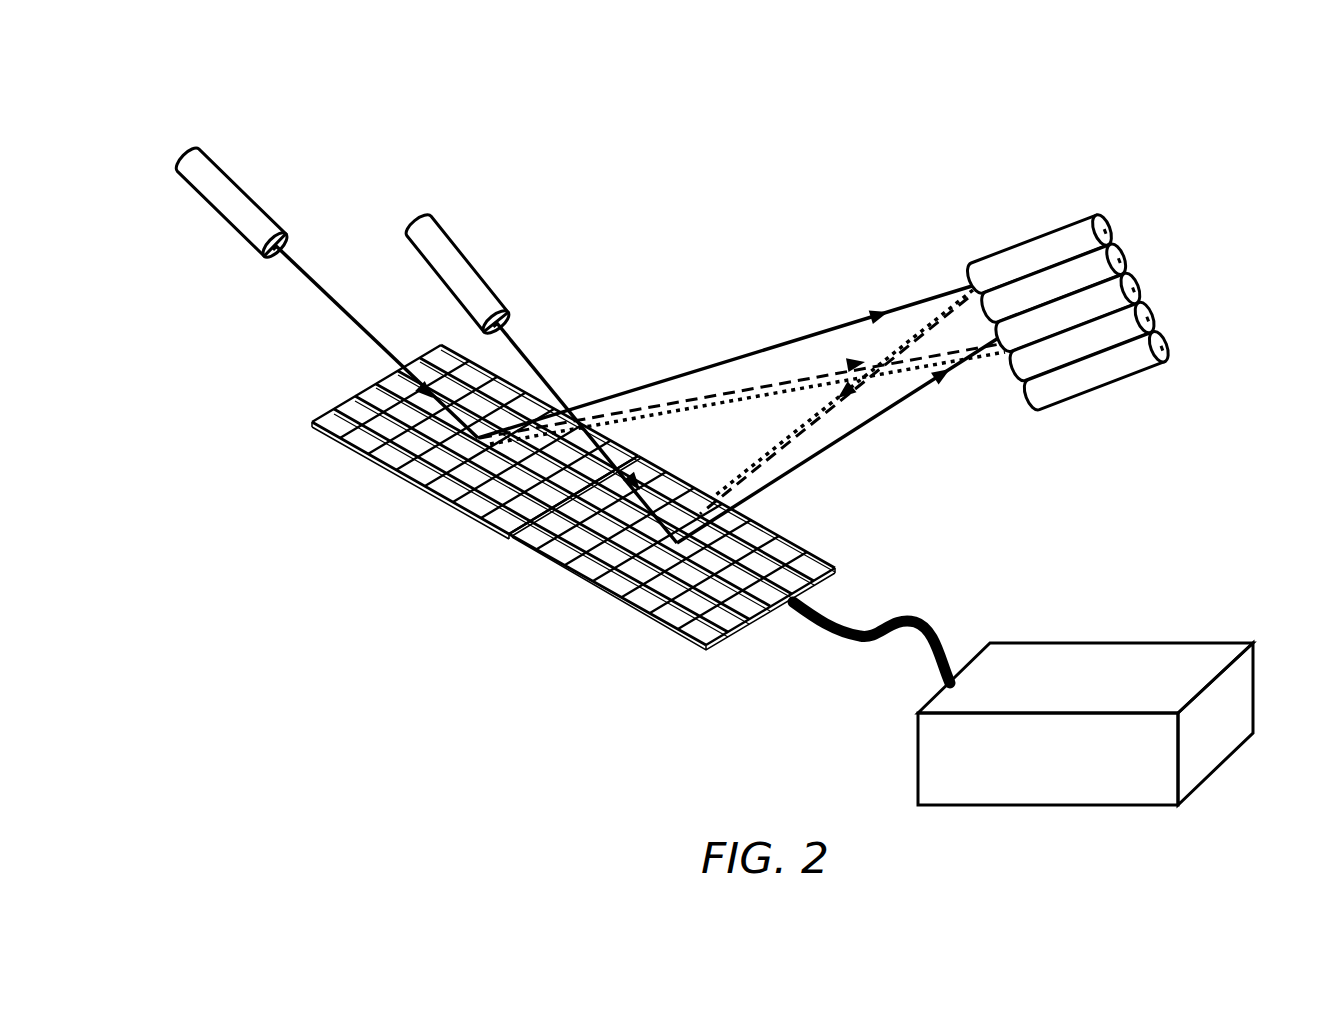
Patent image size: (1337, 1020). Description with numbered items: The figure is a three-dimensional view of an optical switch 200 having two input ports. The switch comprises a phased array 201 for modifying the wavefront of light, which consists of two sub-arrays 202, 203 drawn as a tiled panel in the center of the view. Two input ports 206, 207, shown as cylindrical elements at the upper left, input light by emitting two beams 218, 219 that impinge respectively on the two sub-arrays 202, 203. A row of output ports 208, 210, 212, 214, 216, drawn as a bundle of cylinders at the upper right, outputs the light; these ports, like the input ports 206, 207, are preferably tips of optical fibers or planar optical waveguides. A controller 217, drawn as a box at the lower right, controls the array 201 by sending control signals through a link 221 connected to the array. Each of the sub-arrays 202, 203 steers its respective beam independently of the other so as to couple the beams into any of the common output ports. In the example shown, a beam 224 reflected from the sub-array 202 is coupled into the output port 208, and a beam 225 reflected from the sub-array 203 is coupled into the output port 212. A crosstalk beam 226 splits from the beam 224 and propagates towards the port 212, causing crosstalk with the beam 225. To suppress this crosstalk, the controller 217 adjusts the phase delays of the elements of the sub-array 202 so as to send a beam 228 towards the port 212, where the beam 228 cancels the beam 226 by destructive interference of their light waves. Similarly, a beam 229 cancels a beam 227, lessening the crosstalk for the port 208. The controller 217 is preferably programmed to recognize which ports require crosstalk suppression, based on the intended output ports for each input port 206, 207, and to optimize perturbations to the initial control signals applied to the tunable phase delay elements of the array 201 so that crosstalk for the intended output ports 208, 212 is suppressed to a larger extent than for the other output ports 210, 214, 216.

The optical switch 200 is at (708, 79).
The phased array 201 is at (798, 668).
The sub-array 202 is at (308, 443).
The sub-array 203 is at (503, 553).
The input port 206 is at (220, 160).
The input port 207 is at (453, 238).
The output port 208 is at (1103, 225).
The output port 210 is at (1127, 256).
The output port 212 is at (1137, 285).
The output port 214 is at (1155, 312).
The output port 216 is at (1163, 345).
The controller 217 is at (1028, 777).
The beam 218 is at (313, 288).
The beam 219 is at (528, 347).
The link 221 is at (925, 643).
The beam 224 is at (807, 333).
The beam 225 is at (845, 442).
The crosstalk beam 226 is at (738, 388).
The beam 227 is at (835, 432).
The beam 228 is at (712, 403).
The beam 229 is at (917, 328).